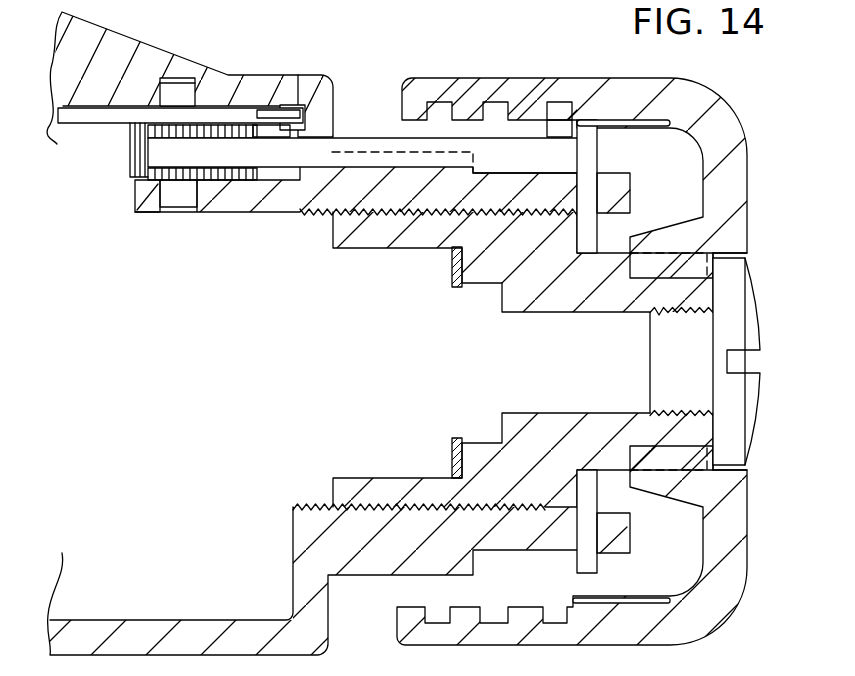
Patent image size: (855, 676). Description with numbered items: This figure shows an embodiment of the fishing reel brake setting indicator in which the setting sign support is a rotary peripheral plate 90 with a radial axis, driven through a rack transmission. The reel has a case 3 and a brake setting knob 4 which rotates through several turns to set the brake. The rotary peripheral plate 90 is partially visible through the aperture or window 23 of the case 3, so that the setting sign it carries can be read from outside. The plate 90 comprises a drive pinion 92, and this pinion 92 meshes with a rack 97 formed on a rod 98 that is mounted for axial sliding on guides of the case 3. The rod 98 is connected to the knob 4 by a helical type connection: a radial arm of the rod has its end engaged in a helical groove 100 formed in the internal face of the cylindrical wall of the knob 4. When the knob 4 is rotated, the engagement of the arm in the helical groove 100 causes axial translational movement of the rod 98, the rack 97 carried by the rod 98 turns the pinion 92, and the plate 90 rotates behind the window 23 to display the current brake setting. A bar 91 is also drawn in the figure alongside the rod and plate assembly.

The case 3 is at (67, 77).
The brake setting knob 4 is at (712, 602).
The aperture or window 23 is at (287, 74).
The rotary peripheral plate 90 is at (90, 118).
The bar 91 is at (280, 128).
The drive pinion 92 is at (130, 153).
The rack 97 is at (222, 155).
The rod 98 is at (315, 210).
The helical groove 100 is at (501, 116).